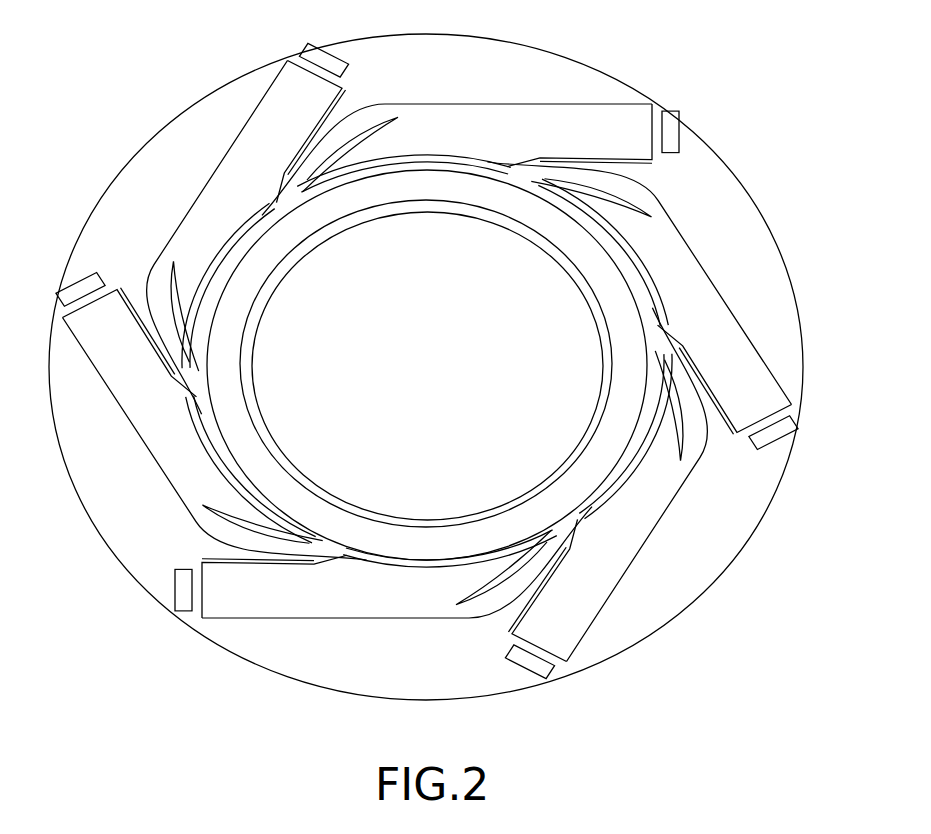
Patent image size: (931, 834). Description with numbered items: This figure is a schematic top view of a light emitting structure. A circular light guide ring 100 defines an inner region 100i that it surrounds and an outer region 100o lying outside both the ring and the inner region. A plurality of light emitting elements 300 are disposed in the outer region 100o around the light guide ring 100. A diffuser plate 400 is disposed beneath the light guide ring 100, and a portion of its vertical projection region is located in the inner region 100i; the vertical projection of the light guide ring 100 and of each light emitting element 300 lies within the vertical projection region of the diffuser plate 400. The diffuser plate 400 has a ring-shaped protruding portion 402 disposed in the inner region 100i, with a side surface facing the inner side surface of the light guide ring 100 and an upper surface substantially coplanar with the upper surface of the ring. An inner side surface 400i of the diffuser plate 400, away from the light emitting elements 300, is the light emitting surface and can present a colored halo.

The light guide ring 100 is at (445, 104).
The inner region 100i is at (453, 374).
The outer region 100o is at (757, 92).
The light emitting elements 300 is at (322, 58).
The diffuser plate 400 is at (145, 137).
The inner side surface 400i is at (293, 266).
The protruding portion 402 is at (266, 252).